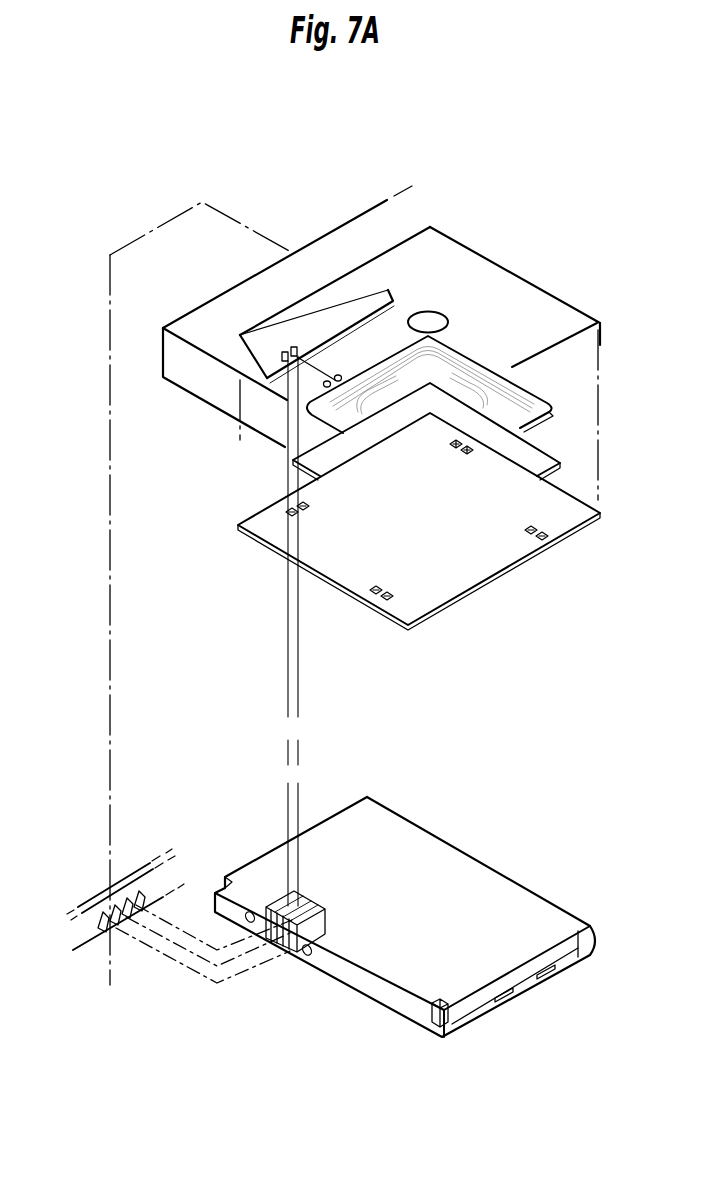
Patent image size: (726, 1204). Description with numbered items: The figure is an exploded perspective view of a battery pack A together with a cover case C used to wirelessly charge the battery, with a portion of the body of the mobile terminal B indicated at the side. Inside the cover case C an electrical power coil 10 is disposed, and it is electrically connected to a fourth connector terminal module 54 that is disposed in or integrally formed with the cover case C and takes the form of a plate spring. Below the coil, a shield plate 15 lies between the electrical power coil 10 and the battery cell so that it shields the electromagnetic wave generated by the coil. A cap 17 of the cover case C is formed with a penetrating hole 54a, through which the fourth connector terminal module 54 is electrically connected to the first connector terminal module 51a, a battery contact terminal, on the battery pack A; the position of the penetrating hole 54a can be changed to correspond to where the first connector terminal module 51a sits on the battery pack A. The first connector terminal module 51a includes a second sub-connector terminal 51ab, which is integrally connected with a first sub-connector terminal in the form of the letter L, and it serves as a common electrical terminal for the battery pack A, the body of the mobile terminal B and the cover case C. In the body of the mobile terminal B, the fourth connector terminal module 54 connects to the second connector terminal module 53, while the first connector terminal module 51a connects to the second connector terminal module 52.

The electrical power coil 10 is at (550, 407).
The shield plate 15 is at (558, 466).
The cap 17 is at (491, 565).
The fourth connector terminal module 54 is at (388, 296).
The penetrating hole 54a is at (271, 529).
The first connector terminal module 51a is at (278, 906).
The second sub-connector terminal 51ab is at (306, 904).
The second connector terminal module 52 is at (101, 926).
The second connector terminal module 53 is at (118, 900).
The battery pack A is at (558, 899).
The body of the mobile terminal B is at (78, 861).
The cover case C is at (320, 233).